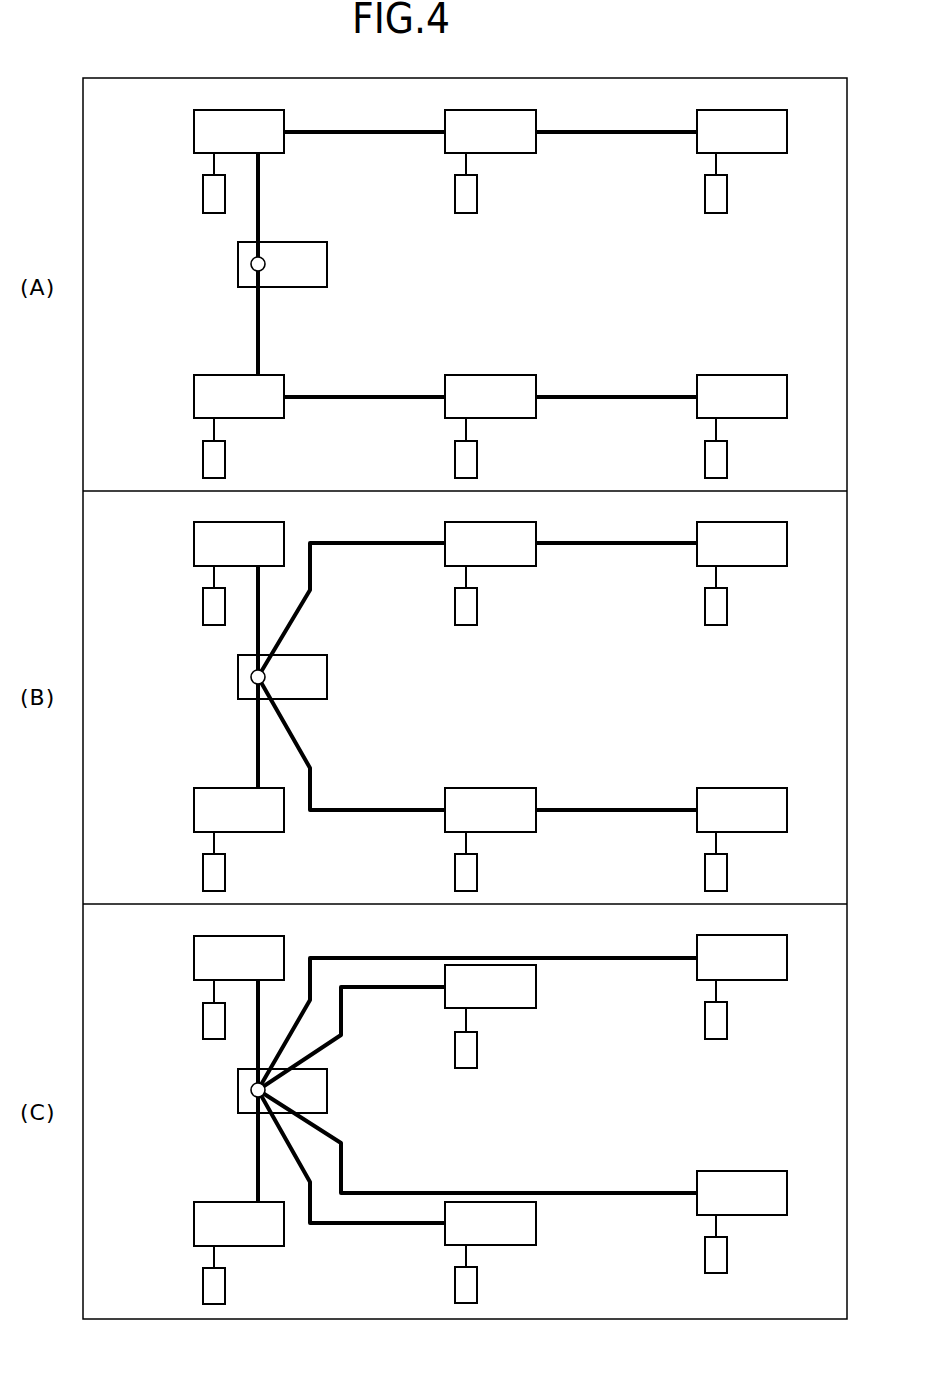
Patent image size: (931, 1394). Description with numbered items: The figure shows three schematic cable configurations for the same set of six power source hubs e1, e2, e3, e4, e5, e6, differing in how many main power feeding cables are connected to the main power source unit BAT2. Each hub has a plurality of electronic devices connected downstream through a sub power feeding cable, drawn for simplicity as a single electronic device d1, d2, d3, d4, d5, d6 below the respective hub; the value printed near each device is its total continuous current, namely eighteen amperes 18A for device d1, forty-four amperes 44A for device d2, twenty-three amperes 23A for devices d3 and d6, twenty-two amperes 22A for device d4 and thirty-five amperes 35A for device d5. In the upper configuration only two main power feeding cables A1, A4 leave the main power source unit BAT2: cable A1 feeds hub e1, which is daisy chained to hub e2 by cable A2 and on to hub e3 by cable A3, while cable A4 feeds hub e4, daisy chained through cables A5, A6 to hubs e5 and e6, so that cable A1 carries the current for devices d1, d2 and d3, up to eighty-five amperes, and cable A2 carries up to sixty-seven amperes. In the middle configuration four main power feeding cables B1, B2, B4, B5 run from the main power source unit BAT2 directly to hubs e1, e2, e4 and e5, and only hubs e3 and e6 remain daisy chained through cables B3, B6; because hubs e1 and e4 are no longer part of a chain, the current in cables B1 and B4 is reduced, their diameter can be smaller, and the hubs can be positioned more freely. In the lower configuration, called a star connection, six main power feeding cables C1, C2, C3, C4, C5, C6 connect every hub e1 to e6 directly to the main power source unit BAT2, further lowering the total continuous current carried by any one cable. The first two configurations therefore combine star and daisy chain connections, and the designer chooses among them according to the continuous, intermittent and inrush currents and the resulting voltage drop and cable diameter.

The power source hub e1 is at (194, 114).
The power source hub e2 is at (445, 114).
The power source hub e3 is at (697, 114).
The power source hub e4 is at (194, 377).
The power source hub e5 is at (445, 377).
The power source hub e6 is at (697, 377).
The electronic device d1 is at (203, 191).
The electronic device d2 is at (455, 191).
The electronic device d3 is at (705, 191).
The electronic device d4 is at (203, 451).
The electronic device d5 is at (455, 451).
The electronic device d6 is at (705, 451).
The total amount of continuous current 18A is at (181, 602).
The total amount of continuous current 44A is at (432, 617).
The total amount of continuous current 23A is at (683, 718).
The total amount of continuous current 22A is at (181, 866).
The total amount of continuous current 35A is at (432, 865).
The main power source unit BAT2 is at (327, 264).
The main power feeding cable A1 is at (262, 222).
The main power feeding cable A2 is at (303, 133).
The main power feeding cable A3 is at (558, 133).
The main power feeding cable A4 is at (262, 354).
The main power feeding cable A5 is at (303, 398).
The main power feeding cable A6 is at (558, 398).
The main power feeding cable B1 is at (257, 633).
The main power feeding cable B2 is at (348, 545).
The main power feeding cable B3 is at (558, 545).
The main power feeding cable B4 is at (257, 715).
The main power feeding cable B5 is at (348, 812).
The main power feeding cable B6 is at (558, 812).
The main power feeding cable C1 is at (257, 1045).
The main power feeding cable C2 is at (348, 989).
The main power feeding cable C3 is at (558, 960).
The main power feeding cable C4 is at (257, 1128).
The main power feeding cable C5 is at (348, 1225).
The main power feeding cable C6 is at (558, 1195).